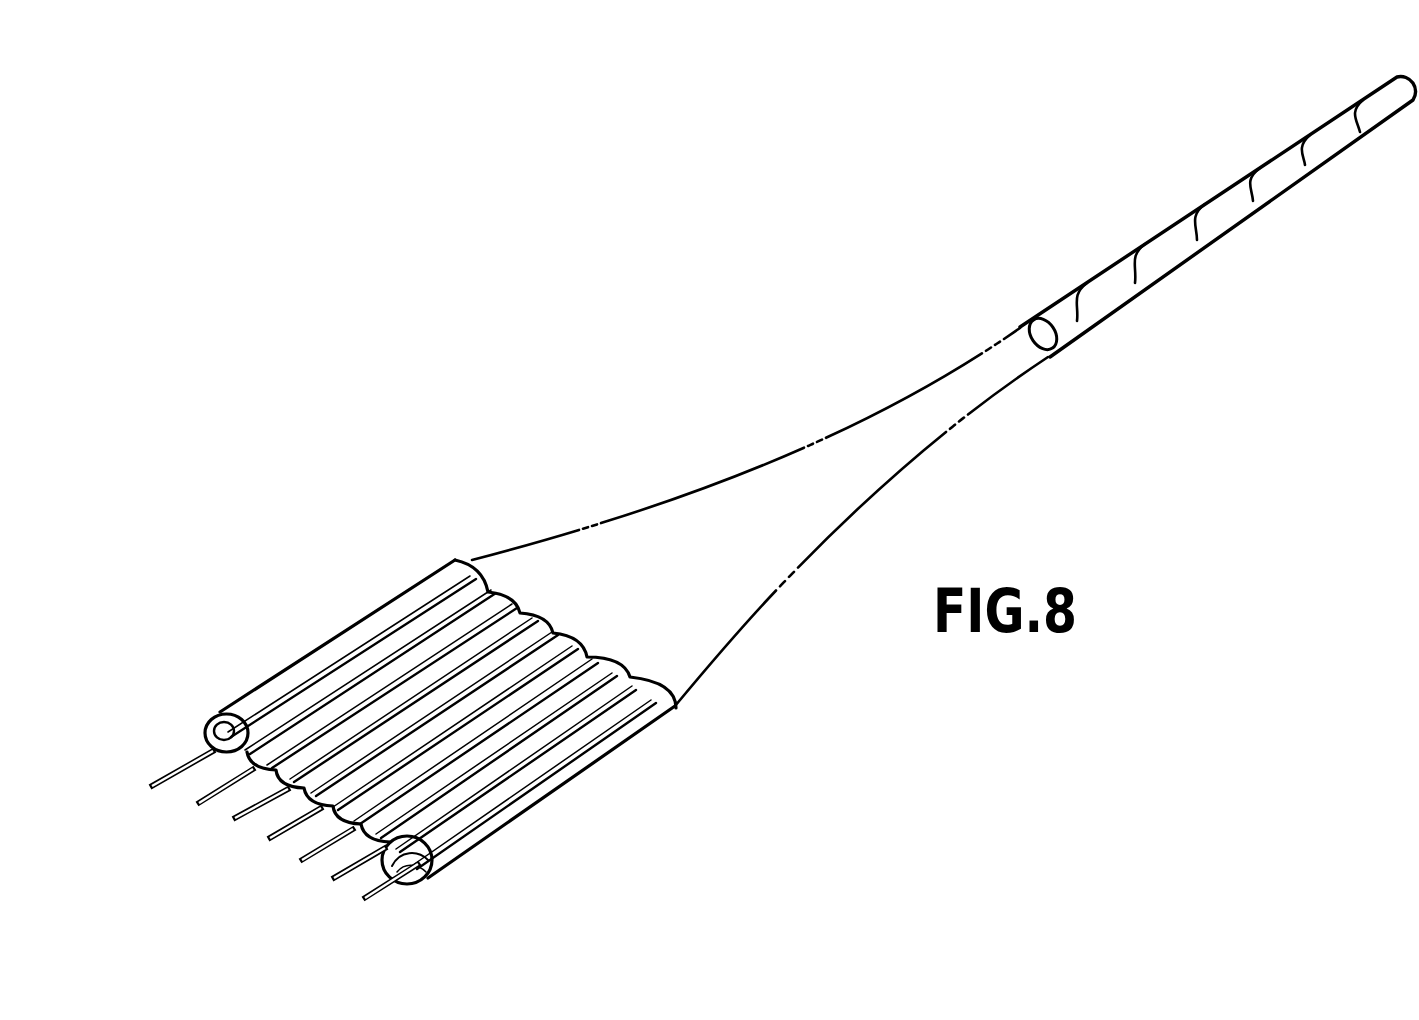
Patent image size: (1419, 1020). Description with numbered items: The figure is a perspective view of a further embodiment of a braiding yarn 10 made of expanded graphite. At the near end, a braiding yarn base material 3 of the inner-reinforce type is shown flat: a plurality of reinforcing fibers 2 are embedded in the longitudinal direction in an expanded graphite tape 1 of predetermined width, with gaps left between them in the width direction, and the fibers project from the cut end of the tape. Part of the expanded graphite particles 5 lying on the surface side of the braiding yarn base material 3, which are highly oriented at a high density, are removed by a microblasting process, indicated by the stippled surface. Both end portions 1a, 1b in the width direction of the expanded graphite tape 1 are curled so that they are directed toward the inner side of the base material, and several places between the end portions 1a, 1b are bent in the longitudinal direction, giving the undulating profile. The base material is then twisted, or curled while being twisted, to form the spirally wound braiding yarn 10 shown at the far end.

The expanded graphite tape 1 is at (350, 693).
The end portion 1a is at (420, 886).
The end portion 1b is at (240, 708).
The reinforcing fiber 2 is at (249, 818).
The braiding yarn base material 3 is at (391, 600).
The expanded graphite particles 5 is at (580, 763).
The braiding yarn 10 is at (1226, 190).